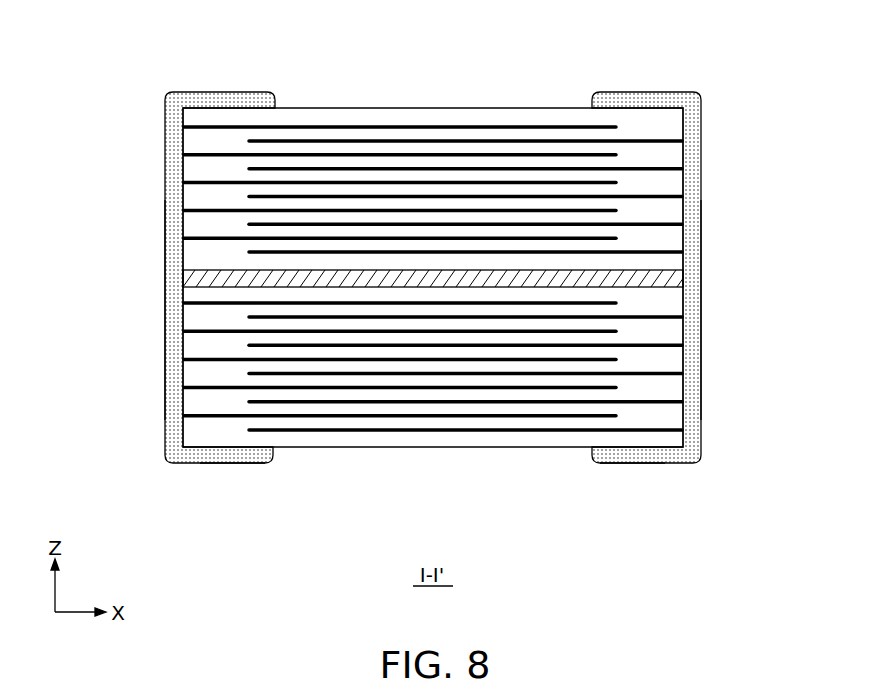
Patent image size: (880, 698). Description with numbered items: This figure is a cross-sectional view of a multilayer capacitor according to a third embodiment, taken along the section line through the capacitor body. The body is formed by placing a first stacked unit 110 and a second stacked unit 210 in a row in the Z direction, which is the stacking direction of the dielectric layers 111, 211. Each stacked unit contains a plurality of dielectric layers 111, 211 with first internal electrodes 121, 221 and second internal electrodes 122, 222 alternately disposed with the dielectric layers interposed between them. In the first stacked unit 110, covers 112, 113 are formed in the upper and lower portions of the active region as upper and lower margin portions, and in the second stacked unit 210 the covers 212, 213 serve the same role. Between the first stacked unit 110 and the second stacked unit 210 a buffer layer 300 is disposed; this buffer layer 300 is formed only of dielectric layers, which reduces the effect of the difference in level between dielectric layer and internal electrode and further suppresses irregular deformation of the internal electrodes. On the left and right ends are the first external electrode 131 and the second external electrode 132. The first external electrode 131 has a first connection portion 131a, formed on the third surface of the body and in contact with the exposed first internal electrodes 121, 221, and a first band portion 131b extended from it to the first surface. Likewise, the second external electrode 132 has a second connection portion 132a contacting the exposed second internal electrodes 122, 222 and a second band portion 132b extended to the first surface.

The first stacked unit 110 is at (686, 178).
The dielectric layer 111 is at (205, 170).
The cover 112 is at (438, 118).
The cover 113 is at (625, 262).
The first internal electrode 121 is at (330, 127).
The second internal electrode 122 is at (546, 128).
The first external electrode 131 is at (77, 413).
The first connection portion 131a is at (175, 422).
The first band portion 131b is at (213, 455).
The second external electrode 132 is at (793, 413).
The second connection portion 132a is at (692, 422).
The second band portion 132b is at (653, 457).
The second stacked unit 210 is at (686, 356).
The dielectric layer 211 is at (205, 347).
The cover 212 is at (437, 445).
The cover 213 is at (265, 295).
The first internal electrode 221 is at (331, 420).
The second internal electrode 222 is at (545, 433).
The buffer layer 300 is at (665, 276).